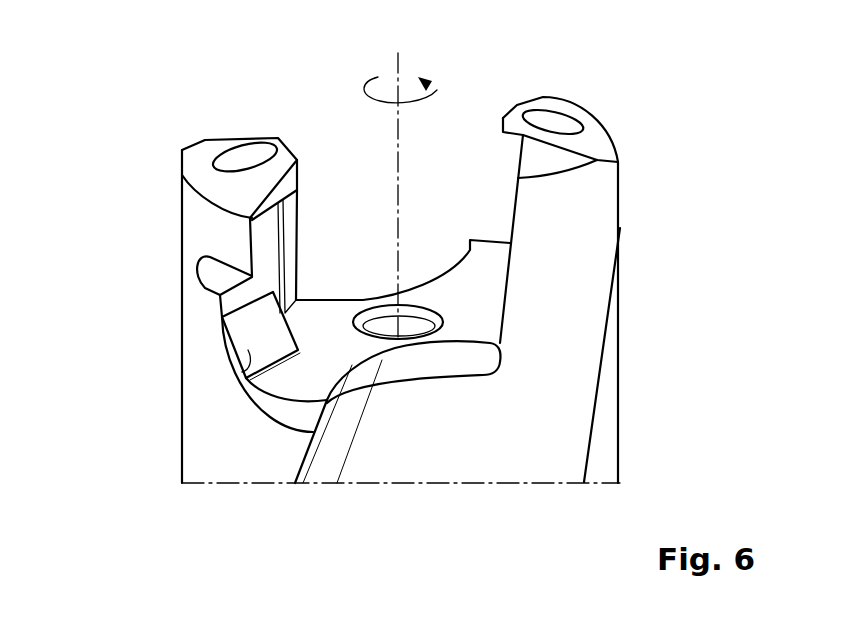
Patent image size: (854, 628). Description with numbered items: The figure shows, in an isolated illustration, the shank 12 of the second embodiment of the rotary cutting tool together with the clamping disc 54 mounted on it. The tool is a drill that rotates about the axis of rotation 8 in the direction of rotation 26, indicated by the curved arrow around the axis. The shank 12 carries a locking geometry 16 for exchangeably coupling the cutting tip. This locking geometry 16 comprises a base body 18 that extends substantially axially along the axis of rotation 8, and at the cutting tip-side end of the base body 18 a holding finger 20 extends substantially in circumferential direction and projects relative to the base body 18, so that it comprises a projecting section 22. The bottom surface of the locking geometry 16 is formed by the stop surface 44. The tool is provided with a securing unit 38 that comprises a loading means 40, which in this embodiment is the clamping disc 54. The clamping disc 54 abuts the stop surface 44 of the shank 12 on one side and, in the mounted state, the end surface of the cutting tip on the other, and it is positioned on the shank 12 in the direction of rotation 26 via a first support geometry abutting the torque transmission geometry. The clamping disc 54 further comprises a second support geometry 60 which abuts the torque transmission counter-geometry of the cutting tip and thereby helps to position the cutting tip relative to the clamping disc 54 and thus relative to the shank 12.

The axis of rotation 8 is at (397, 62).
The shank 12 is at (610, 422).
The locking geometry 16 is at (199, 323).
The base body 18 is at (202, 300).
The holding finger 20 is at (198, 157).
The projecting section 22 is at (235, 237).
The direction of rotation 26 is at (437, 90).
The securing unit 38 is at (257, 402).
The loading means 40 is at (443, 357).
The stop surface 44 is at (257, 408).
The clamping disc 54 is at (305, 450).
The second support geometry 60 is at (223, 373).